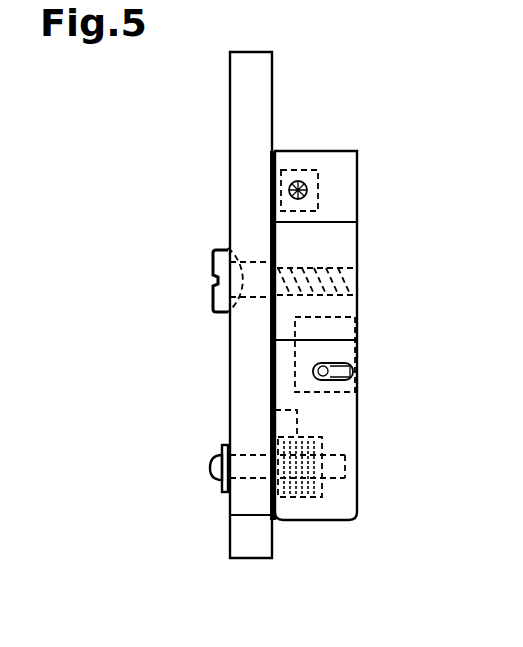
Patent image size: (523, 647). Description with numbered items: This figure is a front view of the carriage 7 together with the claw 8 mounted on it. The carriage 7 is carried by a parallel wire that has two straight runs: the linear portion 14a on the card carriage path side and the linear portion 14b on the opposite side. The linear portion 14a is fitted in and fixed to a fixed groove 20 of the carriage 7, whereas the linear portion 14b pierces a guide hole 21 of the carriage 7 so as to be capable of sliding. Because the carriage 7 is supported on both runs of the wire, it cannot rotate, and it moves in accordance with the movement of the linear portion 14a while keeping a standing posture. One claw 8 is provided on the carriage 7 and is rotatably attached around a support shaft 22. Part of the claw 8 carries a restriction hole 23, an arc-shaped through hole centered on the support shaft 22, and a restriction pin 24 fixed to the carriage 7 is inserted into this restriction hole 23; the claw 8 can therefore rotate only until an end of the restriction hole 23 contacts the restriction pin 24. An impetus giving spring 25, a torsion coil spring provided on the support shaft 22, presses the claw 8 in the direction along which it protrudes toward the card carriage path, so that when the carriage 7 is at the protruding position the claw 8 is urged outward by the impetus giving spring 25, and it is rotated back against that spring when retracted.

The carriage 7 is at (343, 431).
The claw 8 is at (236, 414).
The linear portion of the wire on the card carriage path side 14a is at (340, 366).
The linear portion of the wire on the opposite side 14b is at (305, 199).
The fixed groove 20 is at (345, 373).
The guide hole 21 is at (308, 184).
The support shaft 22 is at (357, 452).
The restriction hole 23 is at (230, 238).
The restriction pin 24 is at (228, 336).
The impetus giving spring 25 is at (298, 500).